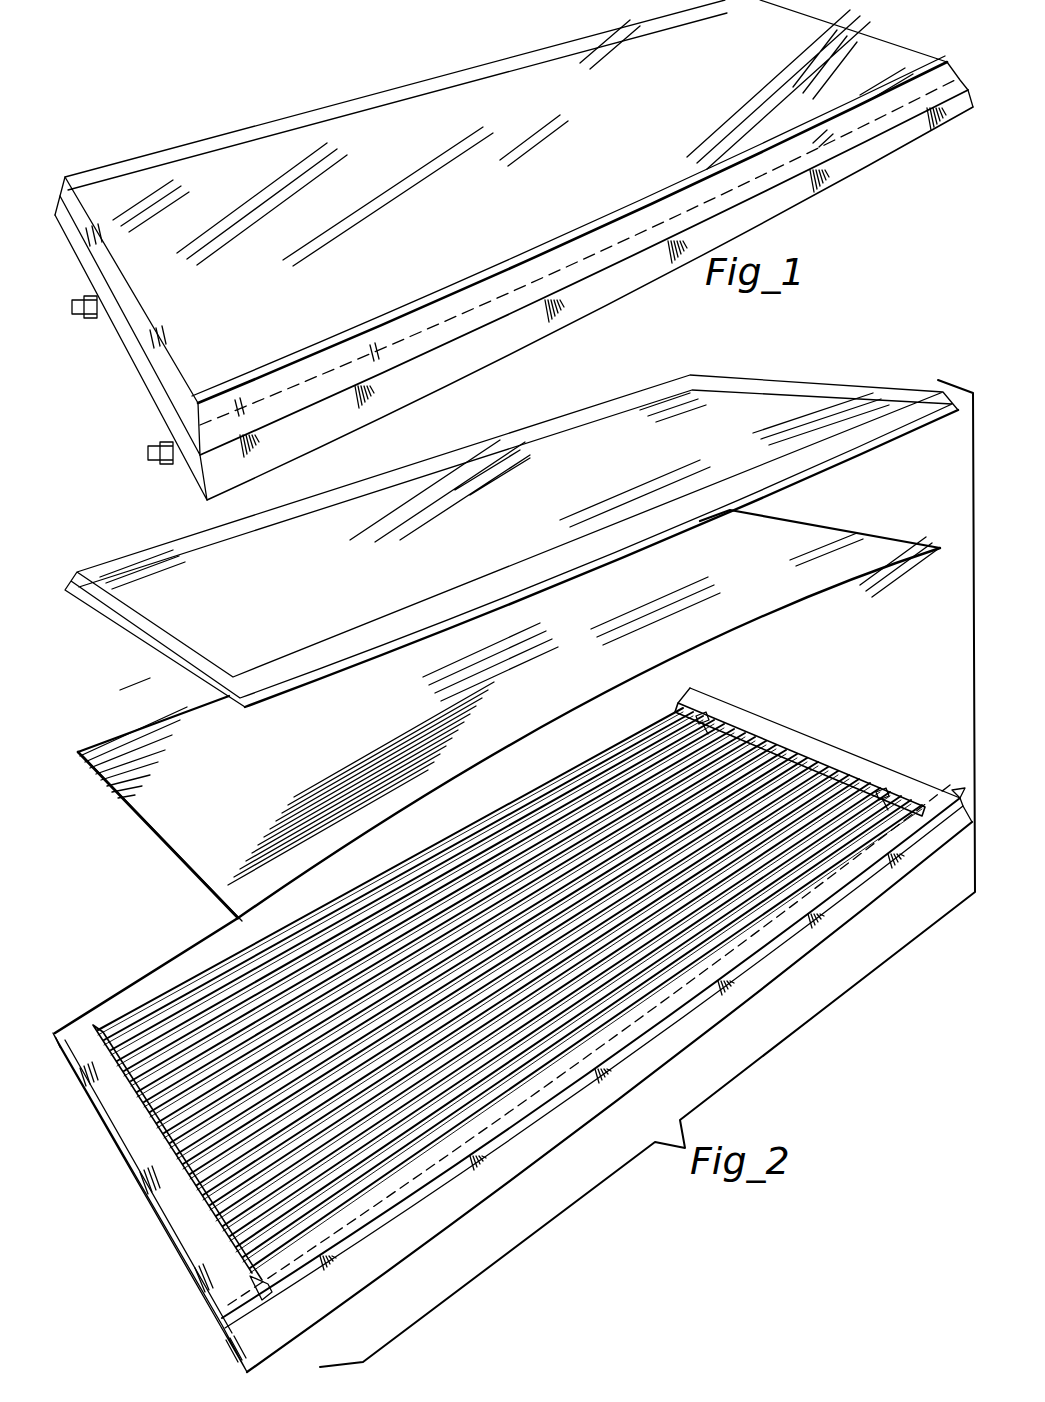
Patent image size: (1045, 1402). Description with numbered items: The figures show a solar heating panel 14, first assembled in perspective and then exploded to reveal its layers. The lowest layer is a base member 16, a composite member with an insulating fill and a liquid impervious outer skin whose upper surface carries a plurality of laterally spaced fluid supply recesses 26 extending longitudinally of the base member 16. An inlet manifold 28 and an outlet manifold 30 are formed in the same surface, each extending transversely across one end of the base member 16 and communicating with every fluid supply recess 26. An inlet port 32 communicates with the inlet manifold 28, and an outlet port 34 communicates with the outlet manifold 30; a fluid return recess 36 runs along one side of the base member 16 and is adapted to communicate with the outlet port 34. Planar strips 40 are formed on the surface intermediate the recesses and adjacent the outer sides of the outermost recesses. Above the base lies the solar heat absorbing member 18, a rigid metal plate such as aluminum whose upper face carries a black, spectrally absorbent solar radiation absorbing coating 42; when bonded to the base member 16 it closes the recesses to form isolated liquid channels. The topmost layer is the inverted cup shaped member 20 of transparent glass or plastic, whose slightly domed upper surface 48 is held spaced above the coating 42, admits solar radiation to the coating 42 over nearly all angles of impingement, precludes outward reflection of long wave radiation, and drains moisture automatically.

In FIG. 1, the solar heating panel 14 is at (345, 90).
In FIG. 1, the base member 16 is at (583, 300).
In FIG. 2, the base member 16 is at (535, 1158).
In FIG. 2, the solar heat absorbing member 18 is at (188, 872).
In FIG. 1, the inverted cup shaped member 20 is at (160, 370).
In FIG. 2, the inverted cup shaped member 20 is at (147, 627).
In FIG. 2, the fluid supply recesses 26 is at (715, 737).
In FIG. 2, the inlet manifold 28 is at (95, 1028).
In FIG. 2, the outlet manifold 30 is at (832, 770).
In FIG. 2, the inlet port 32 is at (127, 1155).
In FIG. 2, the outlet port 34 is at (220, 1318).
In FIG. 2, the fluid return recess 36 is at (363, 1213).
In FIG. 2, the strips 40 is at (757, 750).
In FIG. 2, the solar radiation absorbing coating 42 is at (177, 798).
In FIG. 1, the upper surface 48 is at (562, 163).
In FIG. 2, the upper surface 48 is at (507, 535).